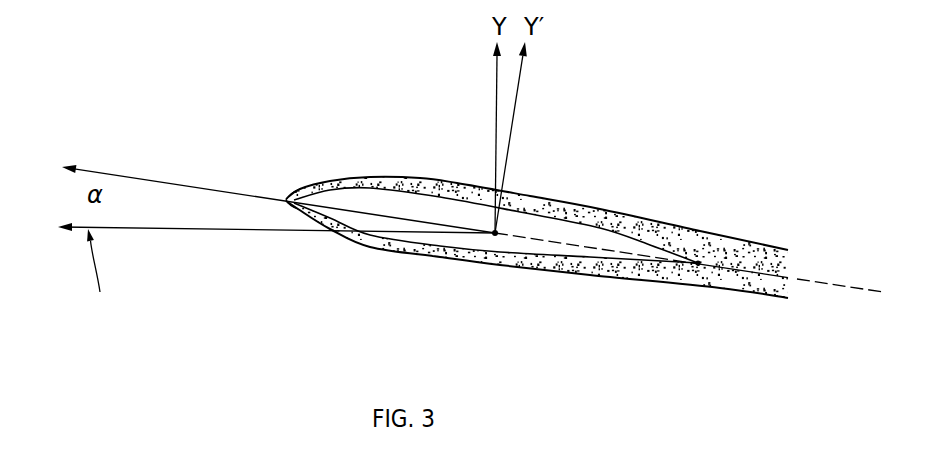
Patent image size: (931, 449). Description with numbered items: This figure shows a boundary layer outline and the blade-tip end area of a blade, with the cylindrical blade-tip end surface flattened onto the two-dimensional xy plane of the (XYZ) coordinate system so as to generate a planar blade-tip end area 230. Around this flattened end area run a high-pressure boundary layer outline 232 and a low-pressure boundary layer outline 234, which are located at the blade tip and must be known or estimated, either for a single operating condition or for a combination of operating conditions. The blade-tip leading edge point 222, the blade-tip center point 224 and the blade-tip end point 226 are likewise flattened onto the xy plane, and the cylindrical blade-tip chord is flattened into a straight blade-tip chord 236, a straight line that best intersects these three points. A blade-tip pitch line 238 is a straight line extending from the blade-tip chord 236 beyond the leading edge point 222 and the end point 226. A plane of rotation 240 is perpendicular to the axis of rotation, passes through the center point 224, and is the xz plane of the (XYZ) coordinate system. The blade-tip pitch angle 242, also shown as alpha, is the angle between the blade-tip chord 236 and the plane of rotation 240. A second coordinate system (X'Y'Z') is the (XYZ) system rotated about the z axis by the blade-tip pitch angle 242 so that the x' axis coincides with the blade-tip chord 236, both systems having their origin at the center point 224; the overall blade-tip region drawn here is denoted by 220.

The airfoil 220 is at (537, 237).
The blade-tip leading edge point 222 is at (287, 198).
The blade-tip center point 224 is at (540, 196).
The blade-tip end point 226 is at (699, 265).
The planar blade-tip end area 230 is at (458, 205).
The high-pressure boundary layer outline 232 is at (632, 280).
The low-pressure boundary layer outline 234 is at (520, 195).
The blade-tip chord 236 is at (407, 215).
The blade-tip pitch line 238 is at (819, 283).
The plane of rotation 240 is at (217, 232).
The blade-tip pitch angle 242 is at (96, 160).